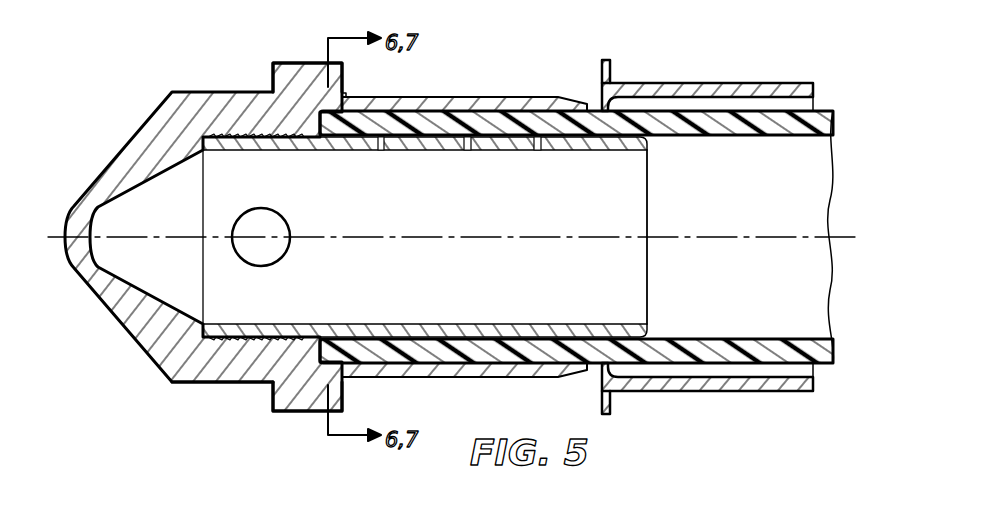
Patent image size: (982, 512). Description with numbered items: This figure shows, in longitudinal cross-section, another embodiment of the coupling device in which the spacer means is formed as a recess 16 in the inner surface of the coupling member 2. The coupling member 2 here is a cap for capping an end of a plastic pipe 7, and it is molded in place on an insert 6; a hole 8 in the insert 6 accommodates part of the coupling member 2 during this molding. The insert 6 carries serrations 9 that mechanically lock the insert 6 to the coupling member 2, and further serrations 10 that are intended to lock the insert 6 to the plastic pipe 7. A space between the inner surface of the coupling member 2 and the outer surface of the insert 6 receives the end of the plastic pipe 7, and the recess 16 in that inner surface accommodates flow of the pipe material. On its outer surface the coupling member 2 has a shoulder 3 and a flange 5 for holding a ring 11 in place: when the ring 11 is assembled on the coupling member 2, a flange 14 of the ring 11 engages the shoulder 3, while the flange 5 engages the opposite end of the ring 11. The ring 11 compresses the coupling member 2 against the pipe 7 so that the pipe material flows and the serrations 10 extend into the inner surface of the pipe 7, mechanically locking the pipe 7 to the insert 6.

The coupling member 2 is at (118, 334).
The shoulder 3 is at (287, 63).
The flange 5 is at (570, 97).
The insert 6 is at (656, 215).
The plastic pipe 7 is at (736, 144).
The hole 8 is at (253, 220).
The serrations 9 is at (193, 382).
The serrations 10 is at (382, 150).
The ring 11 is at (708, 76).
The flange of the ring 14 is at (610, 68).
The recess 16 is at (346, 96).